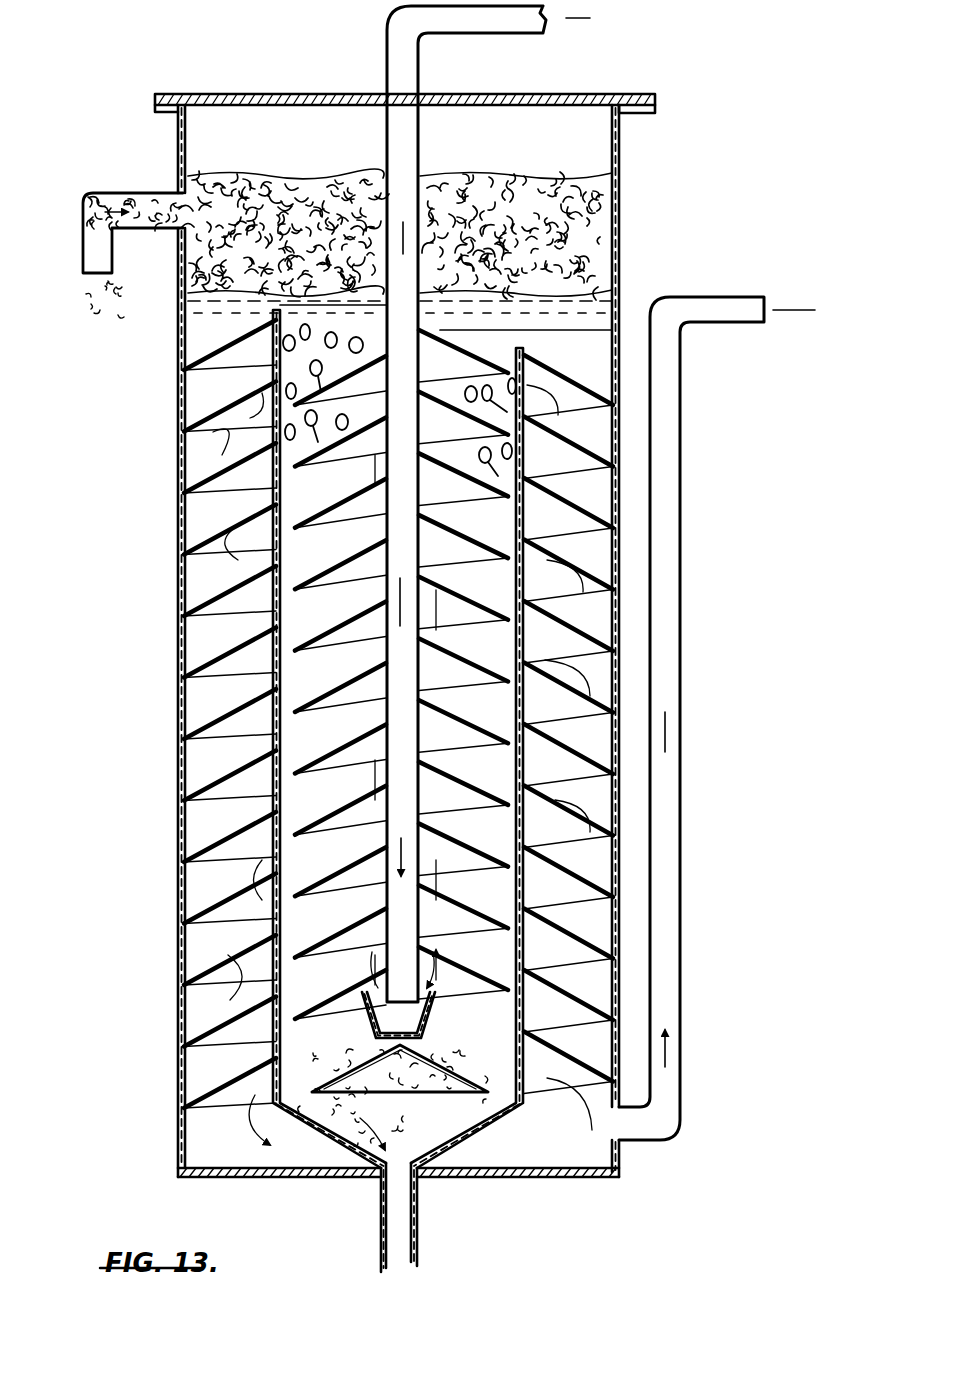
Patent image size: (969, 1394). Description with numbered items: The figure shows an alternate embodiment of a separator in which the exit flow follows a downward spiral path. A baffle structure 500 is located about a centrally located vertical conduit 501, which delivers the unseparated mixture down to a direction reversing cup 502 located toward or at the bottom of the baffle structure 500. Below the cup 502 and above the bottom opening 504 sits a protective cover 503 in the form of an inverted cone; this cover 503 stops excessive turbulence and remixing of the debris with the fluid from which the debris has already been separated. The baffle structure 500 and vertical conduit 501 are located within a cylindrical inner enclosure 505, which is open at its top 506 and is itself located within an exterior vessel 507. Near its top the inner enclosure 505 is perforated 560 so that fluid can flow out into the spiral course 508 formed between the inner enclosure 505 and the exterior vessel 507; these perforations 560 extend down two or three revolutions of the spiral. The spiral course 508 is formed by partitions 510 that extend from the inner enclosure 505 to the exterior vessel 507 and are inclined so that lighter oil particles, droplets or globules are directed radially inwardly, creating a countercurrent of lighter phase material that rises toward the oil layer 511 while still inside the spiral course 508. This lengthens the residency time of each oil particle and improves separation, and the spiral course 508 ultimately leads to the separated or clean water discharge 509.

The baffle structure 500 is at (411, 635).
The vertical conduit 501 is at (388, 70).
The direction reversing cup 502 is at (375, 1030).
The protective cover 503 is at (313, 1090).
The bottom opening 504 is at (405, 1222).
The cylindrical inner enclosure 505 is at (180, 700).
The top 506 is at (455, 372).
The exterior vessel 507 is at (180, 830).
The spiral course 508 is at (210, 453).
The clean water discharge 509 is at (622, 1123).
The partitions 510 is at (197, 603).
The oil layer 511 is at (183, 192).
The perforations 560 is at (184, 370).